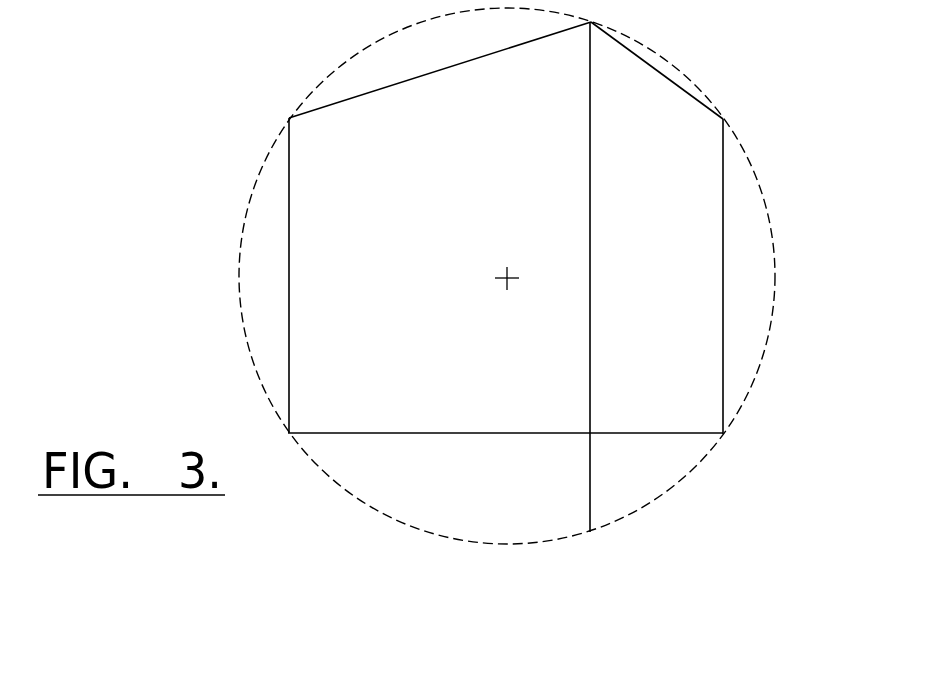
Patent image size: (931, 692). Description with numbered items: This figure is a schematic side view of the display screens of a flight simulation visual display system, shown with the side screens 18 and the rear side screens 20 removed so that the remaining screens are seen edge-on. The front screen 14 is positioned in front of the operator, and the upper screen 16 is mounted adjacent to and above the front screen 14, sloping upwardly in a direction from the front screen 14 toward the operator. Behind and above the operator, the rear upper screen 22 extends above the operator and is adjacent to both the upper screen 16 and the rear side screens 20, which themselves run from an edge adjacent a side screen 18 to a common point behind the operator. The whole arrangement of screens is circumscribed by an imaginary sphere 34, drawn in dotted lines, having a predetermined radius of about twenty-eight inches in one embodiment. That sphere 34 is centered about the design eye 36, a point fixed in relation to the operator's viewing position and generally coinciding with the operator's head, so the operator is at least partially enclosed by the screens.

The front screen 14 is at (289, 207).
The upper screen 16 is at (404, 82).
The side screens 18 is at (323, 320).
The rear side screens 20 is at (687, 270).
The rear upper screen 22 is at (666, 73).
The imaginary sphere 34 is at (750, 157).
The design eye 36 is at (517, 278).